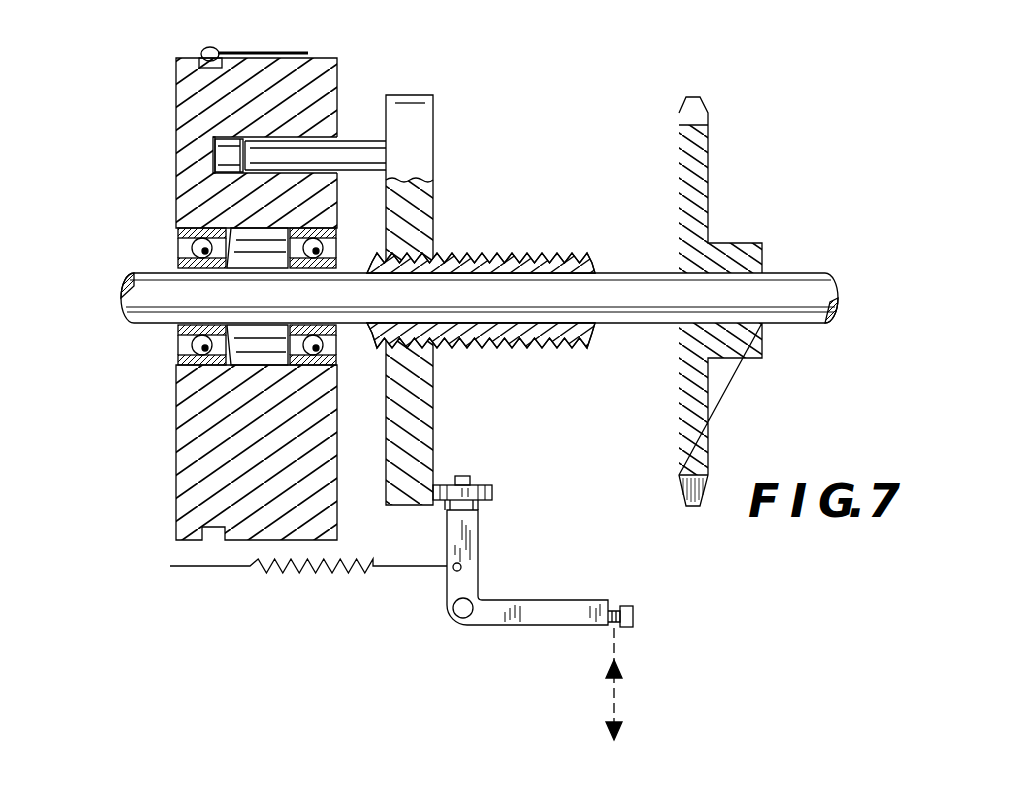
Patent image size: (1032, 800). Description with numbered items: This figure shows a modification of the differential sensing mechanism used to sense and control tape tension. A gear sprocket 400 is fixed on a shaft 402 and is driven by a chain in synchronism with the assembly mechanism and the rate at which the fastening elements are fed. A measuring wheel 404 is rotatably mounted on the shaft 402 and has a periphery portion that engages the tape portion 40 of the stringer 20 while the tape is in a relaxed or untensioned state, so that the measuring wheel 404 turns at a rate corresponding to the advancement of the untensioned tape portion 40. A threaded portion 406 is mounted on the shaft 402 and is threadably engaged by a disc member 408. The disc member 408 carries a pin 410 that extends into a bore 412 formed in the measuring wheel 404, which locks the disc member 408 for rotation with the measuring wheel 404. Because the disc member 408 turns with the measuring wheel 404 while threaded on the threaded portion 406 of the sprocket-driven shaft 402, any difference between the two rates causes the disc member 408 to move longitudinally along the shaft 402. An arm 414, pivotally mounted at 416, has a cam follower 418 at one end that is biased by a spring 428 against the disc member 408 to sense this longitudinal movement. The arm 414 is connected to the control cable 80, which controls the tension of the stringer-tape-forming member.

The stringer 20 is at (266, 40).
The tape portion 40 is at (311, 51).
The control cable 80 is at (622, 668).
The gear sprocket 400 is at (690, 204).
The shaft 402 is at (658, 297).
The measuring wheel 404 is at (322, 80).
The threaded portion 406 is at (498, 256).
The disc member 408 is at (410, 164).
The pin 410 is at (349, 152).
The bore 412 is at (232, 168).
The arm 414 is at (528, 608).
The pivot 416 is at (466, 620).
The cam follower 418 is at (480, 488).
The spring 428 is at (352, 573).